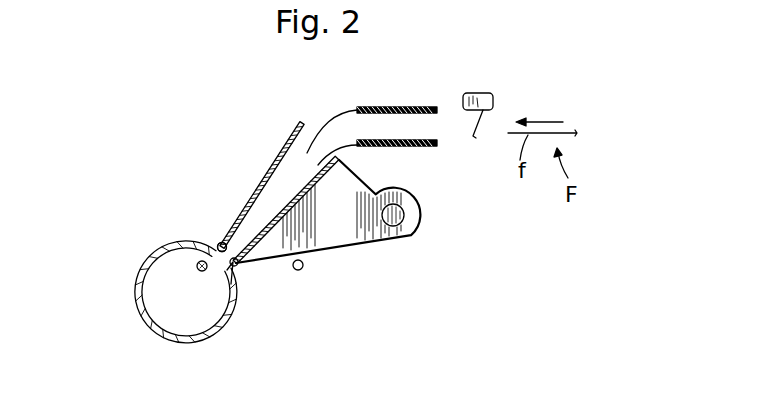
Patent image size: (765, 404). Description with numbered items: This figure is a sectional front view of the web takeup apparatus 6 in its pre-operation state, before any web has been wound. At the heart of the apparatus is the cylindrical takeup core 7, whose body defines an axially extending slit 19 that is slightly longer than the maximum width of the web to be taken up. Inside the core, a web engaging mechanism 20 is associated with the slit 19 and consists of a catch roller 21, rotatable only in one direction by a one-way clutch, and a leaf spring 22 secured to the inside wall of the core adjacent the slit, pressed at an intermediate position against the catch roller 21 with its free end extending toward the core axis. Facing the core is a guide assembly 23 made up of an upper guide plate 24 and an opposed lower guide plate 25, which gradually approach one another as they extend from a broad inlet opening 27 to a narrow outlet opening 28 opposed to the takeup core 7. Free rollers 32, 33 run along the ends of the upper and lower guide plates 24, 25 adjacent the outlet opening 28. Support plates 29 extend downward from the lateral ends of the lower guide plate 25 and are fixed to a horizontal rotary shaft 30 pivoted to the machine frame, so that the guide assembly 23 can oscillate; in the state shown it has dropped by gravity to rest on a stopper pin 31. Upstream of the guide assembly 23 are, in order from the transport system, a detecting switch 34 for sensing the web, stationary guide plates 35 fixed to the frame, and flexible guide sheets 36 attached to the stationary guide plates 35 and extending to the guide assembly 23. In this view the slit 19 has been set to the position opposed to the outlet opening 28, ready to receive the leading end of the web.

The web takeup apparatus 6 is at (112, 101).
The takeup core 7 is at (225, 326).
The slit 19 is at (240, 273).
The web engaging mechanism 20 is at (165, 300).
The catch roller 21 is at (196, 267).
The leaf spring 22 is at (216, 273).
The guide assembly 23 is at (240, 150).
The upper guide plate 24 is at (298, 118).
The lower guide plate 25 is at (307, 193).
The inlet opening 27 is at (305, 150).
The outlet opening 28 is at (232, 236).
The support plate 29 is at (368, 190).
The rotary shaft 30 is at (404, 215).
The stopper pin 31 is at (303, 269).
The free roller 32 is at (217, 243).
The free roller 33 is at (250, 268).
The detecting switch 34 is at (479, 93).
The stationary guide plate 35 is at (402, 107).
The flexible guide sheet 36 is at (330, 110).